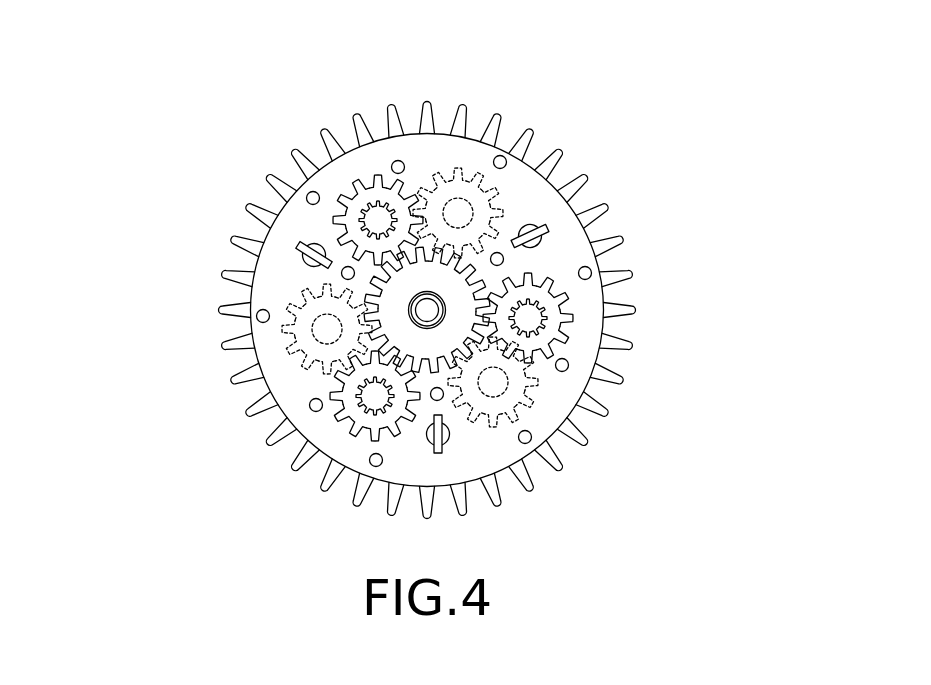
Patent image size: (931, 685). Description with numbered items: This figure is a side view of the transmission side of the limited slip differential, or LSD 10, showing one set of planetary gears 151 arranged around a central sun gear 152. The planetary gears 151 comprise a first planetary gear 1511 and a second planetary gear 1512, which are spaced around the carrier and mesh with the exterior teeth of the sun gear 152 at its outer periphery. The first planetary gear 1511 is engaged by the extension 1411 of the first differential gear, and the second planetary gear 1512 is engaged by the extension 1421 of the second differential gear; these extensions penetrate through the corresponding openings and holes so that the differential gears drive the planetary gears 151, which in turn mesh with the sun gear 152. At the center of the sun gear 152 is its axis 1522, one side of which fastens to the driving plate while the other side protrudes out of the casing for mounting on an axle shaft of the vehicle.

The LSD 10 is at (668, 128).
The planetary gears 151 is at (337, 188).
The first planetary gear 1511 is at (353, 178).
The extension 1411 is at (378, 216).
The second planetary gear 1512 is at (293, 298).
The extension 1421 is at (317, 336).
The sun gear 152 is at (458, 292).
The axis 1522 is at (430, 312).